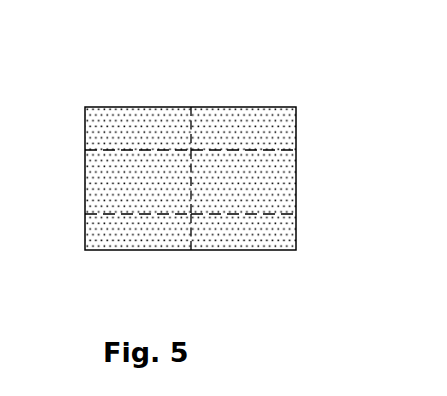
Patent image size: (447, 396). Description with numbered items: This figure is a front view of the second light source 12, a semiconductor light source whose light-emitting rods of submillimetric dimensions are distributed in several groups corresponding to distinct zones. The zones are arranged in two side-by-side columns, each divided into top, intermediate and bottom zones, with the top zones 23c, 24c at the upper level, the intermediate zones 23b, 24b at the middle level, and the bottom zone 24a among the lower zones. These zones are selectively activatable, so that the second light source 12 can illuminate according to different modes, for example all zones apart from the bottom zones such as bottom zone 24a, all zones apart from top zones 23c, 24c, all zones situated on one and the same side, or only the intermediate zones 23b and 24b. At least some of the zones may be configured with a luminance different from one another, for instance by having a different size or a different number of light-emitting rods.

The second light source 12 is at (193, 87).
The top zone 23c is at (105, 122).
The top zone 24c is at (268, 117).
The intermediate zone 23b is at (96, 185).
The bottom zone 24a is at (147, 242).
The intermediate zone 24b is at (303, 236).